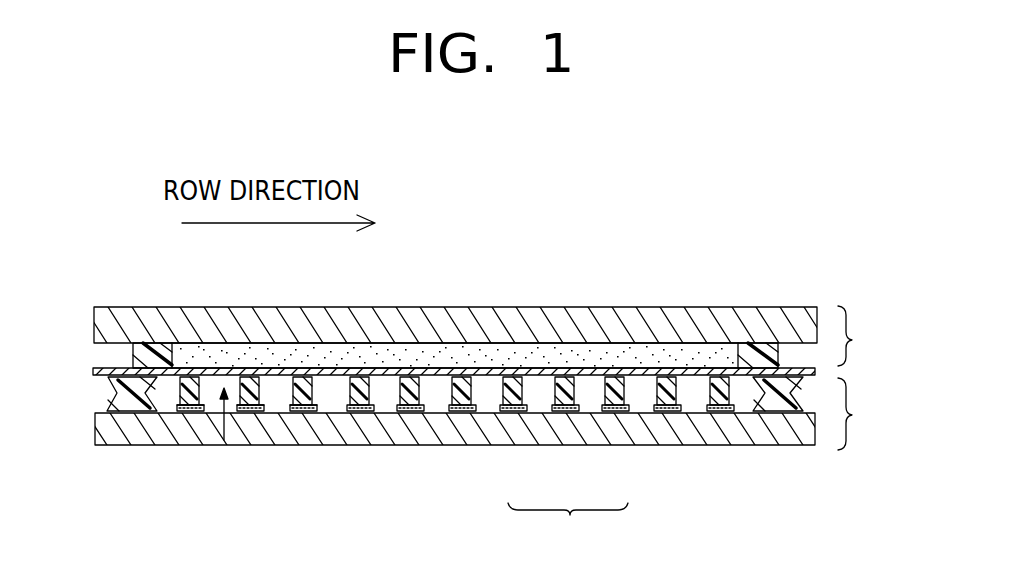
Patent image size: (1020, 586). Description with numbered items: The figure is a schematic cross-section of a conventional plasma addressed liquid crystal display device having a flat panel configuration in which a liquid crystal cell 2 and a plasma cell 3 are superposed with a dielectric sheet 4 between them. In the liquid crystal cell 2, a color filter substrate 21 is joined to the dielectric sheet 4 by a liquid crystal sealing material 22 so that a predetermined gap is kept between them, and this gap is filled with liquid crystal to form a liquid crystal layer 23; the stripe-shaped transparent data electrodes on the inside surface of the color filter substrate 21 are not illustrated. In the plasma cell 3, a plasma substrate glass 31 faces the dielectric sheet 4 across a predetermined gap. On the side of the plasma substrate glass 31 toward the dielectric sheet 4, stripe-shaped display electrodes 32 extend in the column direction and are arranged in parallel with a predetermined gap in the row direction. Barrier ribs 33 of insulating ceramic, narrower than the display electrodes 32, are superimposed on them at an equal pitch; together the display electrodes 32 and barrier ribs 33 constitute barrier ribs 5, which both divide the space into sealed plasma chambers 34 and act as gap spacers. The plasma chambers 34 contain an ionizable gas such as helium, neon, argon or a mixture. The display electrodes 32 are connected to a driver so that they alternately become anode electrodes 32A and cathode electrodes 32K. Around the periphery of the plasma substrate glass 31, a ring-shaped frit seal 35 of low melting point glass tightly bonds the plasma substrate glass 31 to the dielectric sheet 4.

The liquid crystal cell 2 is at (857, 336).
The plasma cell 3 is at (857, 414).
The dielectric sheet 4 is at (818, 372).
The barrier ribs 5 is at (568, 526).
The color filter substrate 21 is at (427, 307).
The liquid crystal sealing material 22 is at (131, 353).
The liquid crystal layer 23 is at (633, 348).
The plasma substrate glass 31 is at (456, 445).
The display electrodes 32 is at (573, 393).
The anode electrodes 32A is at (212, 407).
The cathode electrodes 32K is at (264, 403).
The barrier ribs 33 is at (572, 410).
The plasma chambers 34 is at (224, 440).
The frit seal 35 is at (107, 394).